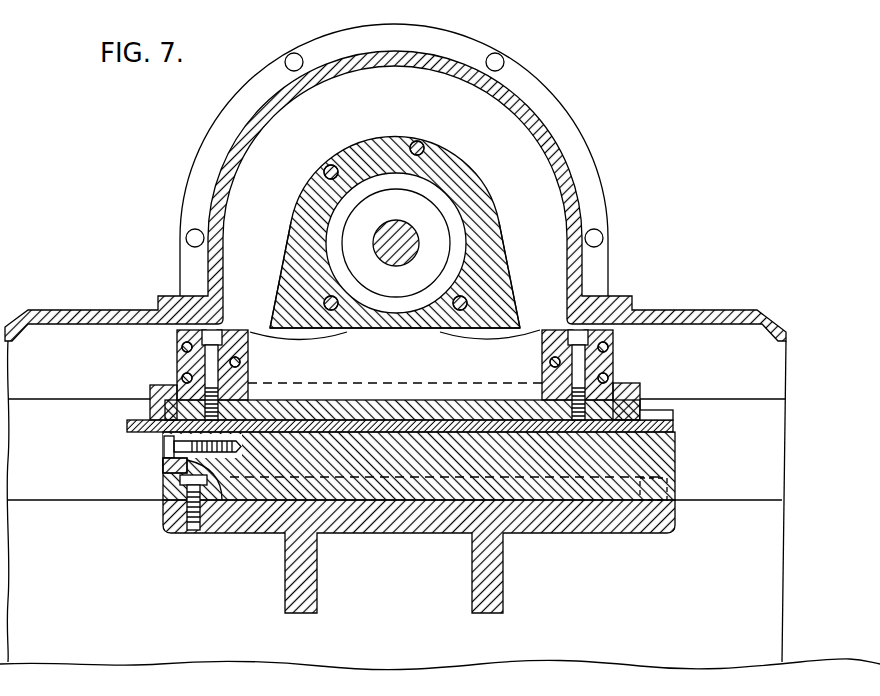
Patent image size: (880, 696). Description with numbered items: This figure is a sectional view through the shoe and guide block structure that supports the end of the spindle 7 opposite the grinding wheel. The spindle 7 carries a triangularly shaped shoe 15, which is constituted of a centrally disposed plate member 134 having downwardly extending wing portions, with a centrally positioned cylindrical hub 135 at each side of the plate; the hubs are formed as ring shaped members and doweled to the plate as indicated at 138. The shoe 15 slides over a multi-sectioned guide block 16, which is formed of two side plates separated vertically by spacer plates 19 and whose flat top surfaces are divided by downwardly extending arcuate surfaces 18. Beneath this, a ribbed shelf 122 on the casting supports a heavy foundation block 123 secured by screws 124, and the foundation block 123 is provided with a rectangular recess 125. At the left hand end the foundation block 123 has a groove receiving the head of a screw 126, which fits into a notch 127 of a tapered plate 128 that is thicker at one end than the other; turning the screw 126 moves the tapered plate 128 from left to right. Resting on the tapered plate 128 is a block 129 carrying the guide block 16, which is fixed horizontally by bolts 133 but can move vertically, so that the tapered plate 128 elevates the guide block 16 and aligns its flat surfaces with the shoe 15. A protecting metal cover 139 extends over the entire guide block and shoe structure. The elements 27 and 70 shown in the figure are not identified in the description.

The spindle 7 is at (373, 249).
The shoe 15 is at (477, 187).
The guide block 16 is at (448, 367).
The arcuate surfaces 18 is at (313, 340).
The spacer plates 19 is at (248, 369).
The housing bottom face 27 is at (407, 330).
The bearing bore 70 is at (424, 207).
The ribbed shelf 122 is at (673, 518).
The foundation block 123 is at (668, 449).
The screws 124 is at (180, 503).
The rectangular recess 125 is at (150, 411).
The screw 126 is at (165, 462).
The notch 127 is at (164, 442).
The tapered plate 128 is at (127, 427).
The block 129 is at (655, 382).
The bolts 133 is at (612, 359).
The plate member 134 is at (507, 266).
The cylindrical hub 135 is at (303, 283).
The dowels 138 is at (414, 140).
The protecting metal cover 139 is at (558, 148).